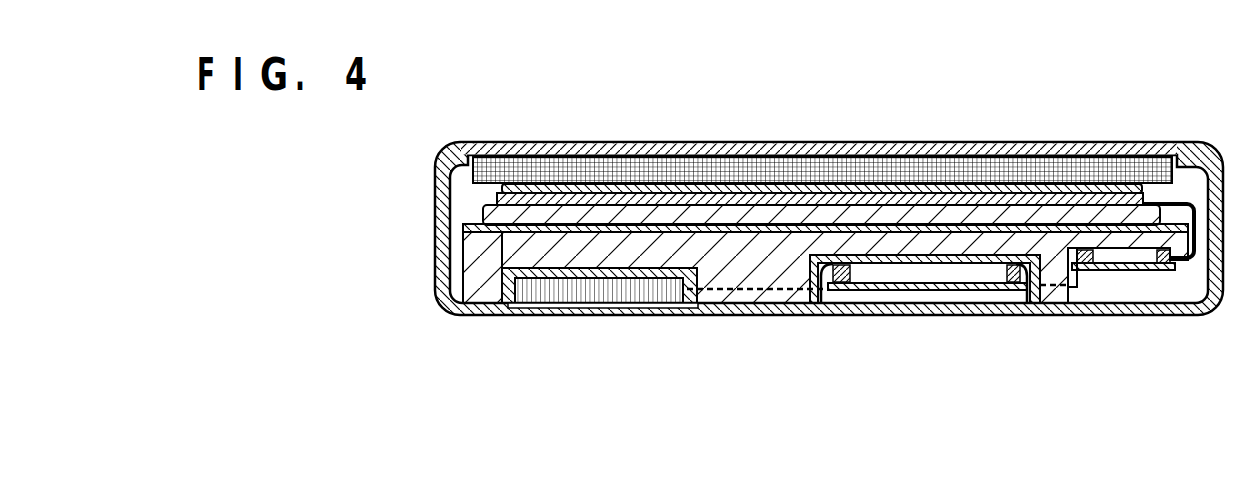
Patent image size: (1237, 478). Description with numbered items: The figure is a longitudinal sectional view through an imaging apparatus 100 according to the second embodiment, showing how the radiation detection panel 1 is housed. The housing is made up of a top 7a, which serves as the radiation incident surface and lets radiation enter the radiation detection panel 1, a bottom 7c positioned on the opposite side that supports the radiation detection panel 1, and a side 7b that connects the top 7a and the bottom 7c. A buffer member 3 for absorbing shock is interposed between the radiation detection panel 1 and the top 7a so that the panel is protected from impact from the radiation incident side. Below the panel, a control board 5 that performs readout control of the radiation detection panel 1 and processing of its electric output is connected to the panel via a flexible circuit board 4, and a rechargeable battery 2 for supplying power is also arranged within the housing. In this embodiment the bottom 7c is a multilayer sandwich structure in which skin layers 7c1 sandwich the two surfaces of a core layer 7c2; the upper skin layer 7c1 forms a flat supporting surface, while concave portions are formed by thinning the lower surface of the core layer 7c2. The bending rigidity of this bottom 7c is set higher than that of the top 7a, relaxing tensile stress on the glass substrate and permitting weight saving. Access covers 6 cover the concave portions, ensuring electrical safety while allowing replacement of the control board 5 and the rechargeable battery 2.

The imaging apparatus 100 is at (409, 266).
The radiation detection panel 1 is at (482, 208).
The rechargeable battery 2 is at (607, 291).
The buffer member 3 is at (733, 168).
The flexible circuit board 4 is at (1188, 264).
The control board 5 is at (1103, 265).
The access cover 6 is at (677, 309).
The top 7a is at (1087, 148).
The side 7b is at (1225, 166).
The bottom 7c is at (822, 332).
The skin layer 7c1 is at (483, 308).
The core layer 7c2 is at (553, 247).